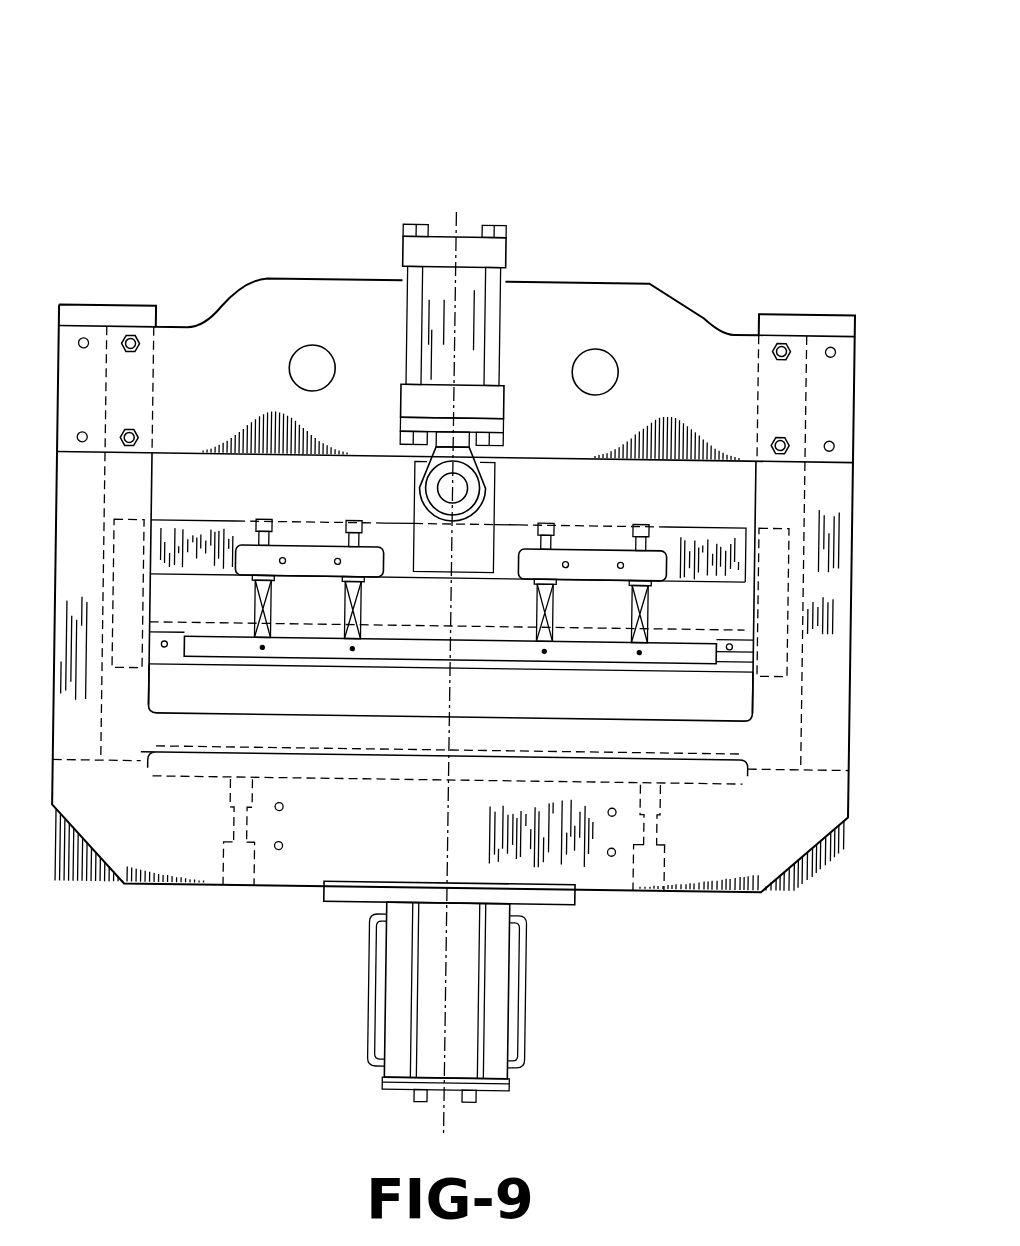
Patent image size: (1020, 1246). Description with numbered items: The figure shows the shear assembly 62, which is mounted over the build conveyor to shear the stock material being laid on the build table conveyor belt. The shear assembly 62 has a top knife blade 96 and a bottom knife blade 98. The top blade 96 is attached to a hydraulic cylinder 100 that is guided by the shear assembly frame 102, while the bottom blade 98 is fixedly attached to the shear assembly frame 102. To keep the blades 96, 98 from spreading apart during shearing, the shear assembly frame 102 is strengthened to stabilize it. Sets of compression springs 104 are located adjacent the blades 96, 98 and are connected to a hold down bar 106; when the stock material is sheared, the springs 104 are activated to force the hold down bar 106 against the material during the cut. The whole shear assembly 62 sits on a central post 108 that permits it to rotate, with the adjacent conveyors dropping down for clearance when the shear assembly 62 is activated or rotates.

The shear assembly 62 is at (240, 100).
The top knife blade 96 is at (718, 640).
The bottom knife blade 98 is at (715, 741).
The hydraulic cylinder 100 is at (469, 311).
The shear assembly frame 102 is at (726, 824).
The compression springs 104 is at (313, 565).
The hold down bar 106 is at (475, 652).
The central post 108 is at (442, 1018).